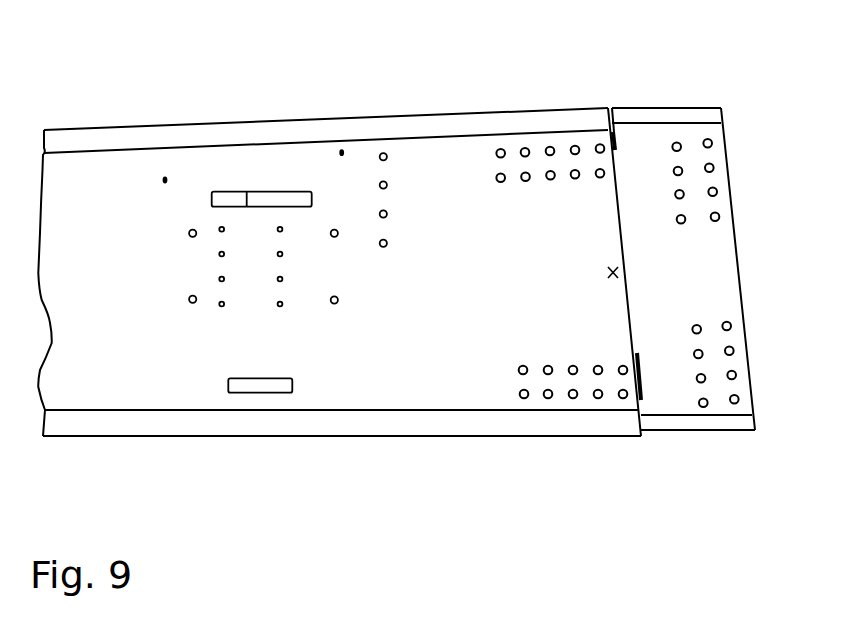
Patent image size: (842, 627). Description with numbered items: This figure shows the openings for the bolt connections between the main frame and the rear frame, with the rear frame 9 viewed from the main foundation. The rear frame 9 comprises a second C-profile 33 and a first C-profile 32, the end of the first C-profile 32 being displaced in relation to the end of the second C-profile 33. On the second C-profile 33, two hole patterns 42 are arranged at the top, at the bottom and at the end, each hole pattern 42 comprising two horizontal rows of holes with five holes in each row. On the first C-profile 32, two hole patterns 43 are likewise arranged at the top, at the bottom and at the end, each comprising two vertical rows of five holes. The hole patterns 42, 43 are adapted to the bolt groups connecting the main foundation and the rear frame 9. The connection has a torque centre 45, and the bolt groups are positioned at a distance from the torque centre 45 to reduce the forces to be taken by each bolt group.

The rear frame 9 is at (232, 100).
The first C-profile 32 is at (723, 253).
The second C-profile 33 is at (143, 353).
The hole patterns 42 is at (523, 148).
The hole patterns 43 is at (707, 142).
The torque centre 45 is at (618, 268).